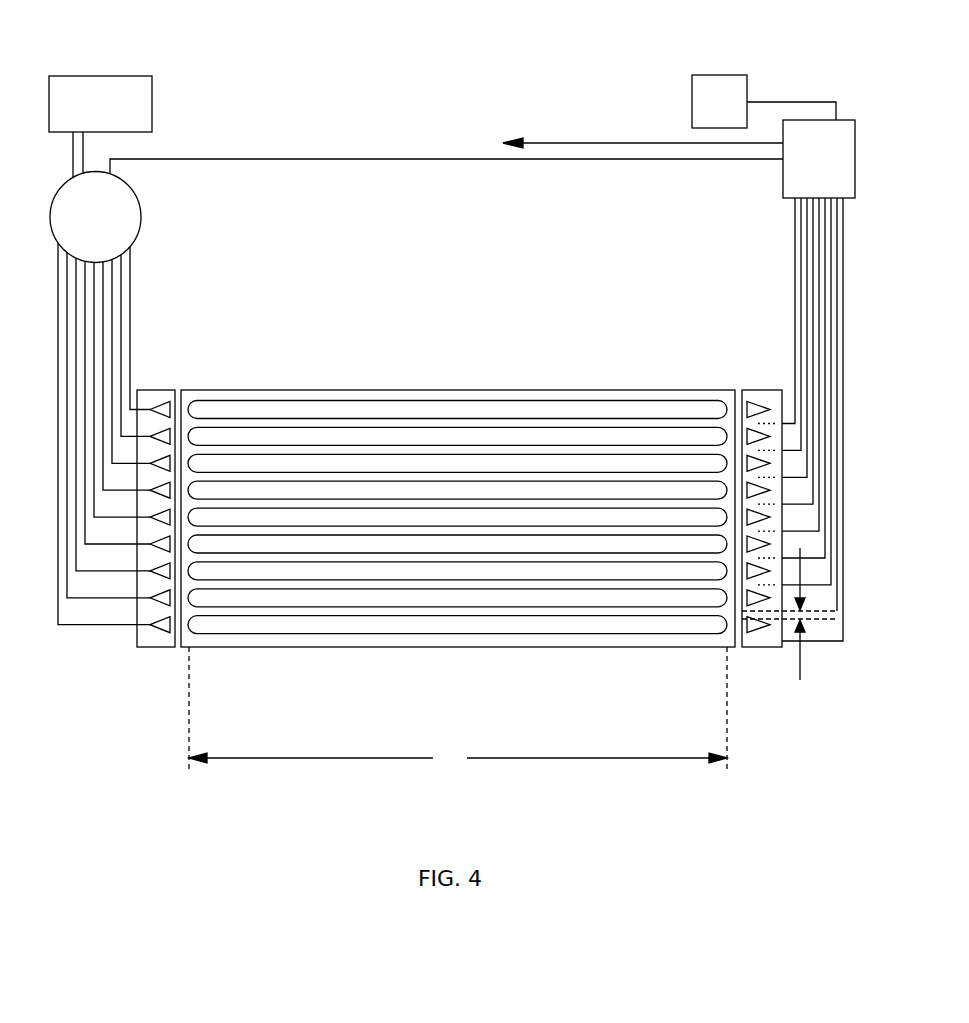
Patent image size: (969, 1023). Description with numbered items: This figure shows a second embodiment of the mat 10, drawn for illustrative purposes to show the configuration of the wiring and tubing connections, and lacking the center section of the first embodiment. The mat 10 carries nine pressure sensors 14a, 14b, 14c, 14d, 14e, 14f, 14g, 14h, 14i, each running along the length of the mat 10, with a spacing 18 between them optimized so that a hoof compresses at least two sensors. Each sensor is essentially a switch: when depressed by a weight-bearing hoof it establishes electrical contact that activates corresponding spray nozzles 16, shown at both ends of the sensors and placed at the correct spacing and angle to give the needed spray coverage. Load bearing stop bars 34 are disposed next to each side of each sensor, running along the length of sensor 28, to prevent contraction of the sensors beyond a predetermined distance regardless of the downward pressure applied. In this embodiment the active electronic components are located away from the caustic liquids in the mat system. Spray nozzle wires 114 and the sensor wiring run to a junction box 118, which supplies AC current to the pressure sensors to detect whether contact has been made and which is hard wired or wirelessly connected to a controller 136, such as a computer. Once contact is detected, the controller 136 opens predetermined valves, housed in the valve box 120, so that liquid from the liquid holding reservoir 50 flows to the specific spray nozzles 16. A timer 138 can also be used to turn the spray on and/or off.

The mat 10 is at (423, 452).
The pressure sensor 14a is at (222, 410).
The pressure sensor 14b is at (292, 437).
The pressure sensor 14c is at (373, 464).
The pressure sensor 14d is at (453, 493).
The pressure sensor 14e is at (345, 515).
The pressure sensor 14f is at (413, 545).
The pressure sensor 14g is at (483, 574).
The pressure sensor 14h is at (550, 600).
The pressure sensor 14i is at (619, 628).
The spray nozzles 16 is at (156, 649).
The spacing 18 is at (789, 614).
The length of sensor 28 is at (458, 710).
The stop bars 34 is at (614, 423).
The liquid holding reservoir 50 is at (103, 97).
The spray nozzle wires 114 is at (797, 287).
The junction box 118 is at (810, 133).
The valve box 120 is at (110, 205).
The controller 136 is at (622, 105).
The timer 138 is at (708, 108).